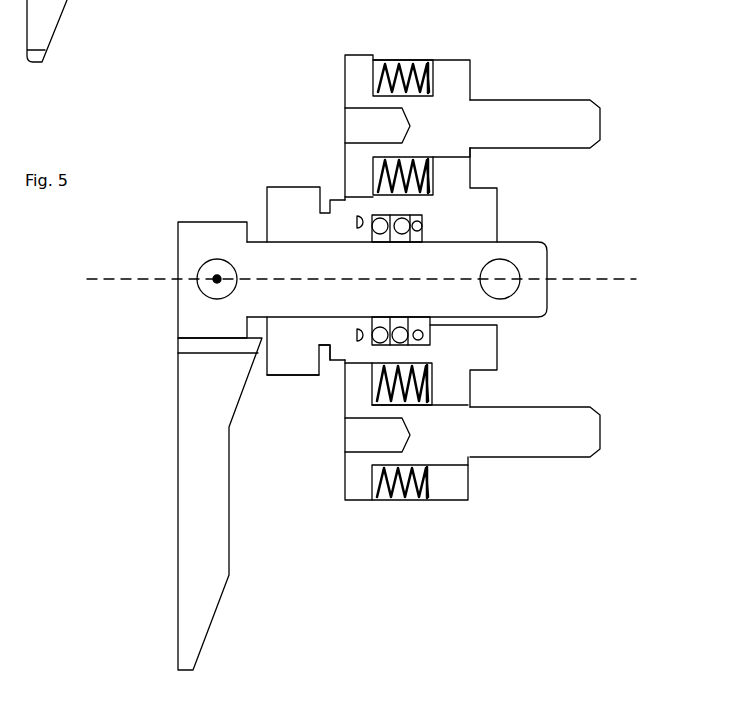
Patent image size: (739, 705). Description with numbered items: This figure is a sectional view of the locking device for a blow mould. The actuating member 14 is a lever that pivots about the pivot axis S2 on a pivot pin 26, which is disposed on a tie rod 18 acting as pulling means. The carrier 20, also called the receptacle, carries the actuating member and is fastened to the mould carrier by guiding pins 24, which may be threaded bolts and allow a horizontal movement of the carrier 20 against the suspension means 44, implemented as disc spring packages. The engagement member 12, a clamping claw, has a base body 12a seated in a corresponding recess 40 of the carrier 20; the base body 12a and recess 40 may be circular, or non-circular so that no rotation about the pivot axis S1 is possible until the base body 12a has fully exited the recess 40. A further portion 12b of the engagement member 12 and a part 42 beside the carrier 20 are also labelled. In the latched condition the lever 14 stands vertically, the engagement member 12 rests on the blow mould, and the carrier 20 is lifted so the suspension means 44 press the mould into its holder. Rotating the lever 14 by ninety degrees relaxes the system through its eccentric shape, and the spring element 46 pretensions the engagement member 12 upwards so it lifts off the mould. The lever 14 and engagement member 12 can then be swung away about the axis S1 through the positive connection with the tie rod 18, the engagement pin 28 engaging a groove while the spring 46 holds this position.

The engagement member 12 is at (302, 203).
The base body 12a is at (327, 335).
The hub body portion 12b is at (287, 362).
The actuating member 14 is at (213, 538).
The tie rod 18 is at (275, 270).
The carrier 20 is at (466, 203).
The guiding pins 24 is at (518, 118).
The pivot pin 26 is at (213, 264).
The engagement pin 28 is at (500, 278).
The recess 40 is at (356, 219).
The carrier body 42 is at (377, 117).
The suspension means 44 is at (399, 521).
The spring element 46 is at (393, 58).
The pivot axis S1 is at (540, 266).
The pivot axis S2 is at (215, 279).